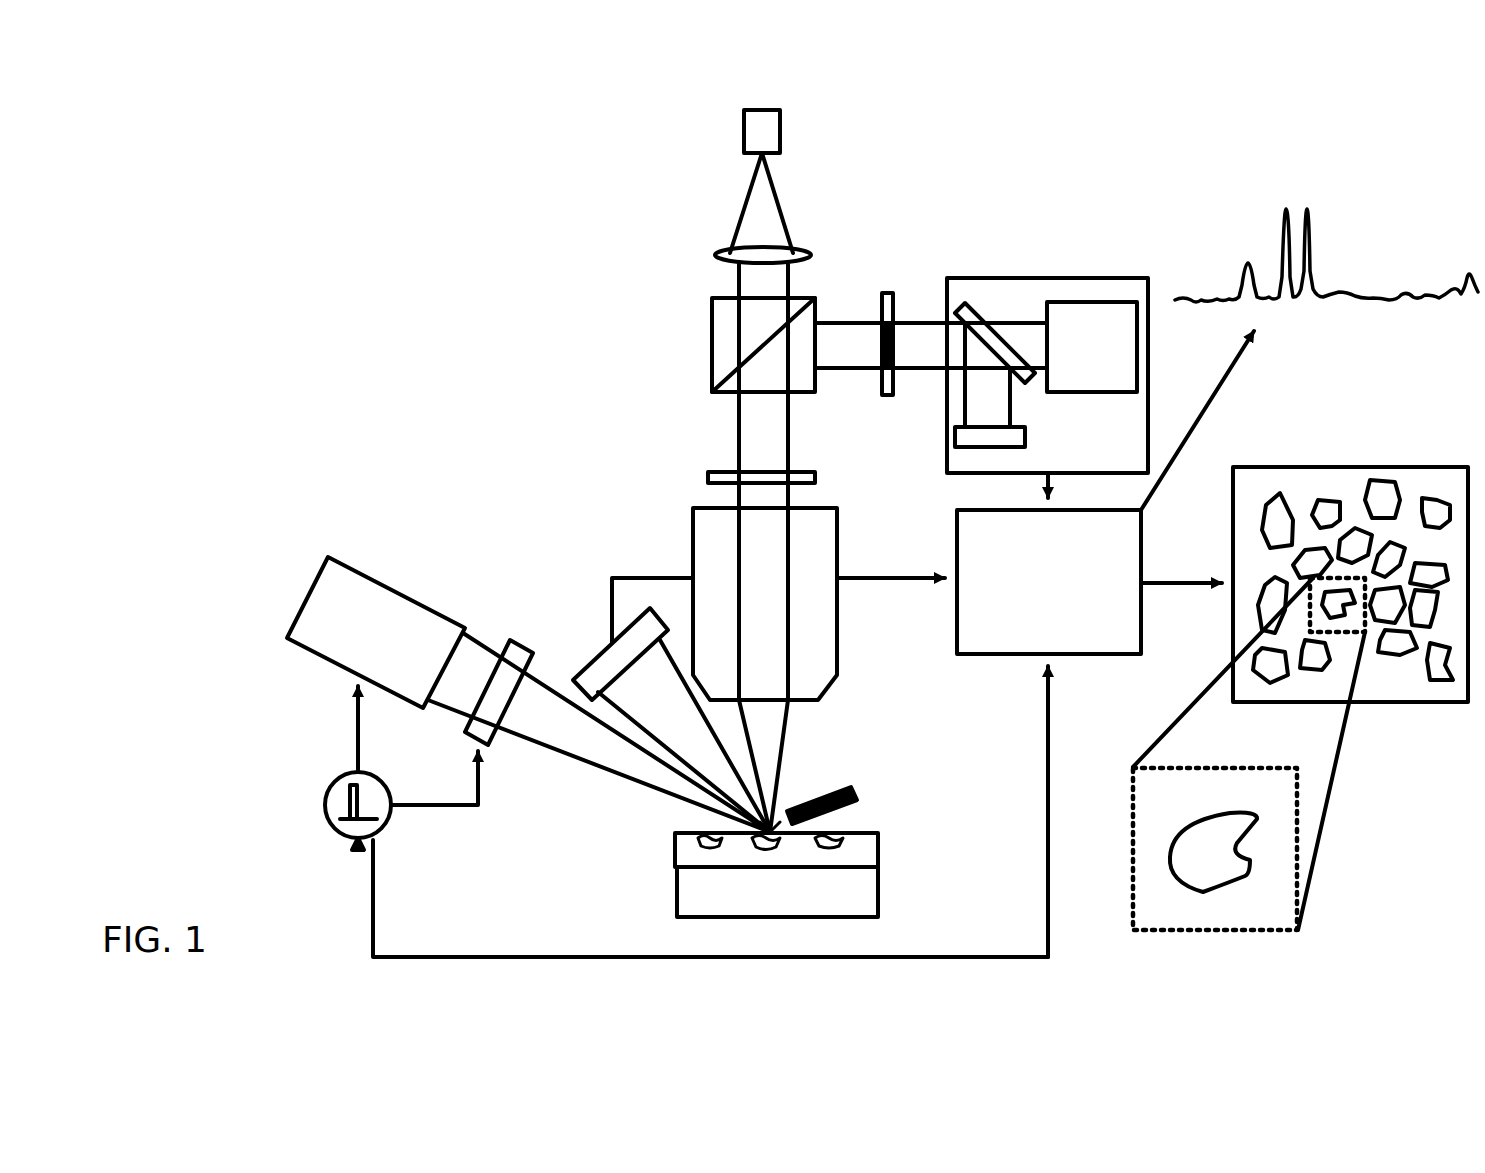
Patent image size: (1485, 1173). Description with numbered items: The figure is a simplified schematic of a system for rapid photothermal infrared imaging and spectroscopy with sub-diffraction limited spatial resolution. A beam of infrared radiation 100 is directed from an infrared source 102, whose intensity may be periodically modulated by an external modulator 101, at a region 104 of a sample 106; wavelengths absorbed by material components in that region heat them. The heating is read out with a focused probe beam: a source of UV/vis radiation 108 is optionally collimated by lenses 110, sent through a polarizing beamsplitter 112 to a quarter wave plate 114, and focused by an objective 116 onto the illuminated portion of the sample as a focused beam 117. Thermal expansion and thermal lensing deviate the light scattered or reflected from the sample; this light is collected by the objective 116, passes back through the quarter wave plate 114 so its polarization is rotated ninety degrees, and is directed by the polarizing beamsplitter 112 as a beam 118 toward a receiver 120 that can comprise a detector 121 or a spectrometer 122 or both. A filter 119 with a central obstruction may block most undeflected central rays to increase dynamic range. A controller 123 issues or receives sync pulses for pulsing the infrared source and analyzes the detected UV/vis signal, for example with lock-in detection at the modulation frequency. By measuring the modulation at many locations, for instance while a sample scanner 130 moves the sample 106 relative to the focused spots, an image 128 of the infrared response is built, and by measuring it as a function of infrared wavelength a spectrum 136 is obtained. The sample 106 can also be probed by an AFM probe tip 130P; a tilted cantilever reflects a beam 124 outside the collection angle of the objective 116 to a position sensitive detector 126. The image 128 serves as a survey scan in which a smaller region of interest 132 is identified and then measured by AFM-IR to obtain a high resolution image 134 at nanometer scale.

The beam of infrared radiation 100 is at (599, 732).
The external modulator 101 is at (501, 681).
The infrared source 102 is at (376, 632).
The region 104 is at (740, 832).
The sample 106 is at (802, 850).
The source of UV/vis radiation 108 is at (761, 168).
The lenses 110 is at (734, 260).
The polarizing beamsplitter 112 is at (731, 481).
The quarter wave plate 114 is at (781, 483).
The objective 116 is at (609, 673).
The focused beam 117 is at (785, 766).
The beam 118 is at (931, 332).
The filter 119 is at (895, 331).
The receiver 120 is at (1047, 378).
The detector 121 is at (990, 454).
The spectrometer 122 is at (1092, 347).
The controller 123 is at (803, 644).
The beam reflected from the cantilever 124 is at (684, 736).
The position sensitive detector 126 is at (611, 654).
The image 128 is at (1350, 571).
The sample scanner 130 is at (777, 892).
The probe tip 130P is at (777, 832).
The region of interest 132 is at (1338, 632).
The high resolution image 134 is at (1215, 871).
The spectrum 136 is at (1326, 255).